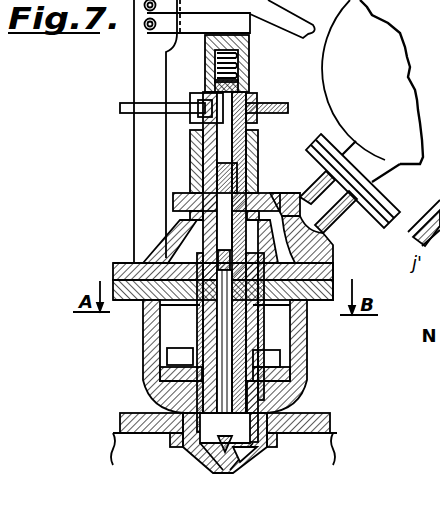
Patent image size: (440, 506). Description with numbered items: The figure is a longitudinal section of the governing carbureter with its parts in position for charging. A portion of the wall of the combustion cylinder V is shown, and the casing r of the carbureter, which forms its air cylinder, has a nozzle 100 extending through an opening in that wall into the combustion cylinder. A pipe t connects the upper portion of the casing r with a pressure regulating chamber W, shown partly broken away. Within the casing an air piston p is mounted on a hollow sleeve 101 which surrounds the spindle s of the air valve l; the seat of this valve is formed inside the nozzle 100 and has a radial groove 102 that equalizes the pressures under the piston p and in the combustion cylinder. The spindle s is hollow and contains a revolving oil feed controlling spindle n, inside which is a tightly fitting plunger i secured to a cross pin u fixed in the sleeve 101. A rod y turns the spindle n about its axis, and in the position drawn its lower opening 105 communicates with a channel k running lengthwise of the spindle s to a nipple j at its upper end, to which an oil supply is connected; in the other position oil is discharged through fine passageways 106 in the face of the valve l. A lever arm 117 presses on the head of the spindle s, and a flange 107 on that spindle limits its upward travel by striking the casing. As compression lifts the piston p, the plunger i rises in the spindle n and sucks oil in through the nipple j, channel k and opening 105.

The lever arm 117 is at (251, 29).
The spindle of the air valve s is at (249, 75).
The nipple j is at (278, 101).
The rod y is at (127, 107).
The oil feed controlling spindle n is at (223, 147).
The flange 107 is at (263, 195).
The cross pin u is at (220, 258).
The pipe t is at (340, 218).
The pressure regulating chamber W is at (372, 82).
The casing r is at (160, 328).
The hollow spindle or sleeve 101 is at (165, 335).
The channel k is at (237, 318).
The plunger i is at (220, 338).
The air piston p is at (150, 384).
The wall of the combustion cylinder V is at (140, 433).
The nozzle 100 is at (187, 455).
The fine passageways 106 is at (200, 457).
The air valve l is at (225, 468).
The radial groove 102 is at (248, 457).
The opening 105 is at (268, 447).